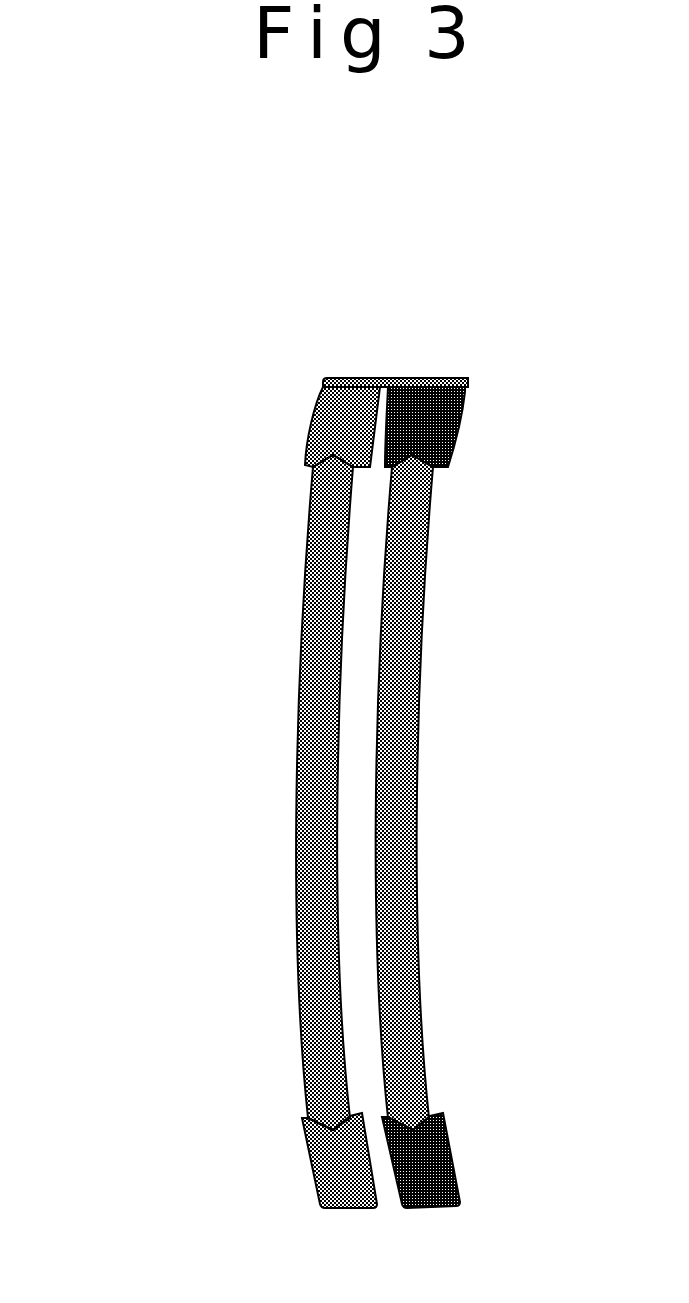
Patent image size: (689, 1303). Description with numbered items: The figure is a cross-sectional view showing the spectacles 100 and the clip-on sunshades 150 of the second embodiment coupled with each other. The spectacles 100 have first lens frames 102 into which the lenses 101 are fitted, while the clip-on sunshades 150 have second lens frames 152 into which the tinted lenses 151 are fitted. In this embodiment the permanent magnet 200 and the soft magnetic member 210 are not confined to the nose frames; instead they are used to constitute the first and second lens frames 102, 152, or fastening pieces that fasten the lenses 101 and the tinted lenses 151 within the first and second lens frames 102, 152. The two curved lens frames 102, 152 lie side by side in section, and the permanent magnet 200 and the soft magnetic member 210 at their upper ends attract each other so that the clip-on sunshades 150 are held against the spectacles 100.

The spectacles 100 is at (514, 831).
The lenses 101 is at (410, 650).
The first lens frames 102 is at (450, 1160).
The clip-on sunshades 150 is at (213, 797).
The tinted lenses 151 is at (301, 657).
The second lens frames 152 is at (306, 1168).
The permanent magnet 200 is at (468, 336).
The soft magnetic member 210 is at (400, 378).